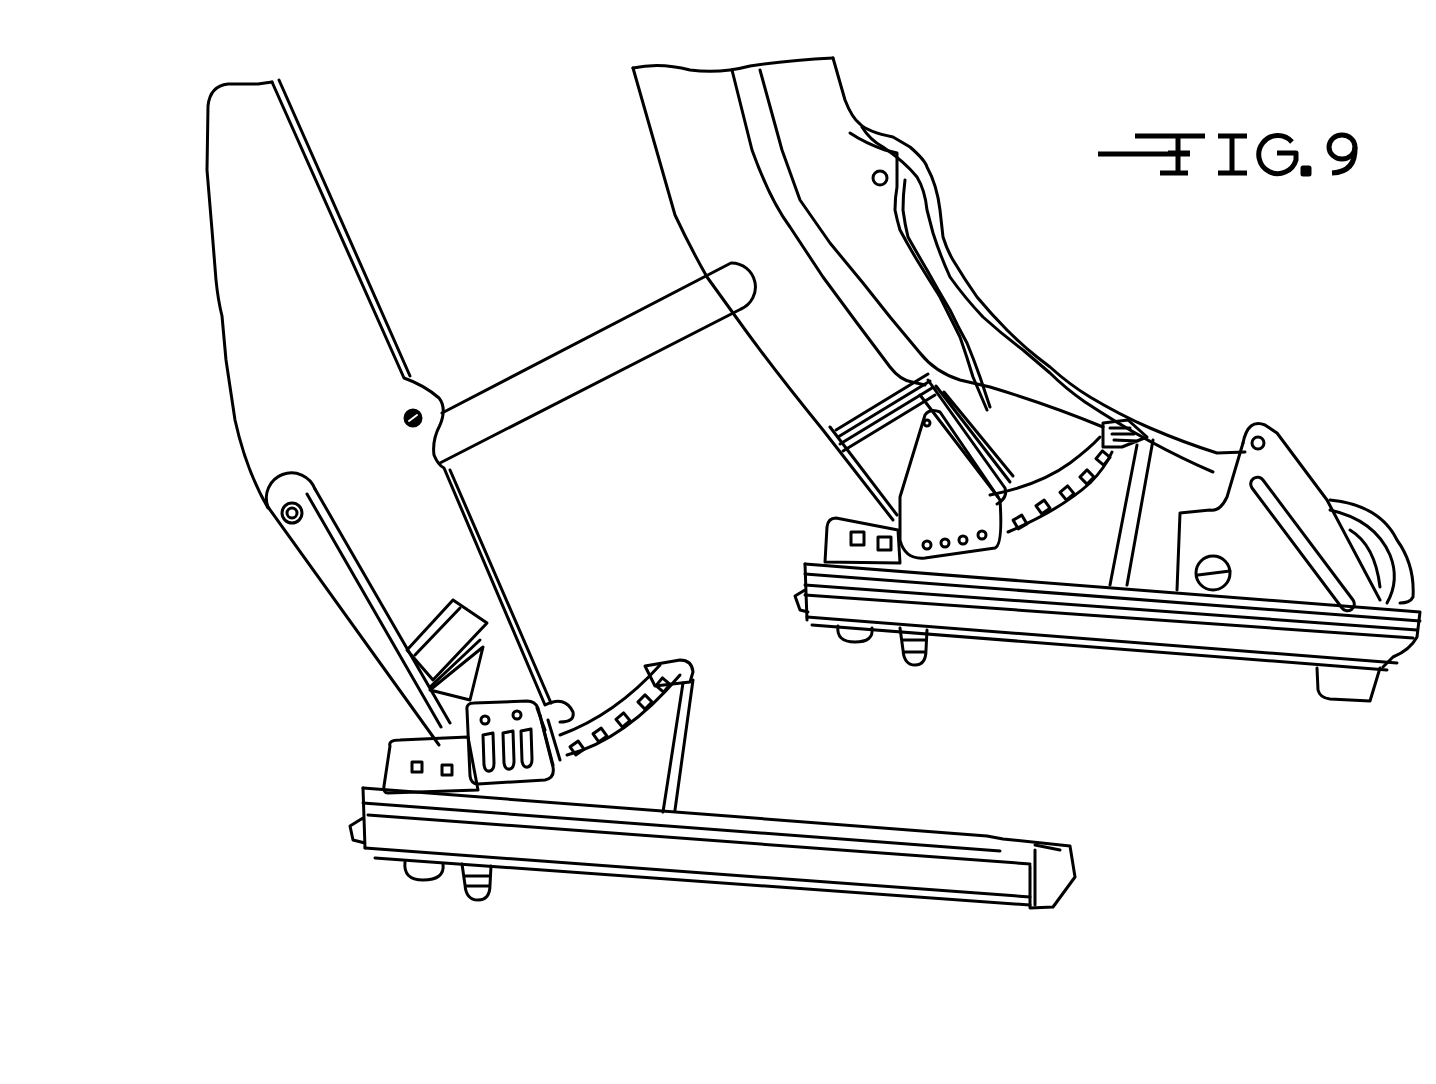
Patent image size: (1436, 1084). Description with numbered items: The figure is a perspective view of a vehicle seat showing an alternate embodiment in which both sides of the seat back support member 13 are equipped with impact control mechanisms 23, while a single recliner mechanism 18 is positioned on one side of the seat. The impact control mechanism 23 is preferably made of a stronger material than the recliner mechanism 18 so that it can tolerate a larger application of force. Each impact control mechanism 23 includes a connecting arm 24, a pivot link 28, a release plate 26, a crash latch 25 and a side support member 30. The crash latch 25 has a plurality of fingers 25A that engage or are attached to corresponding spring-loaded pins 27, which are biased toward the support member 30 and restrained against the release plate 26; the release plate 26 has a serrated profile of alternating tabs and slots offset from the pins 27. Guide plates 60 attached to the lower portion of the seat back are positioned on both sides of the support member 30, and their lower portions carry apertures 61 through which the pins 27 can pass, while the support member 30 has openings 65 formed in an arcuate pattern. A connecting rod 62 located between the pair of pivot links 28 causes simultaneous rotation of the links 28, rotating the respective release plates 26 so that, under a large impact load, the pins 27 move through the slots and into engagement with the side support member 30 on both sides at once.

The seat back support member 13 is at (258, 365).
The recliner mechanism 18 is at (910, 150).
The impact control mechanism 23 is at (400, 724).
The connecting arm 24 is at (370, 603).
The crash latch 25 is at (547, 720).
The fingers 25A is at (553, 765).
The release plate 26 is at (483, 682).
The pins 27 is at (527, 763).
The pivot link 28 is at (268, 509).
The support member 30 is at (647, 770).
The guide plates 60 is at (920, 505).
The apertures 61 is at (963, 543).
The connecting rod 62 is at (527, 423).
The openings 65 is at (1047, 515).